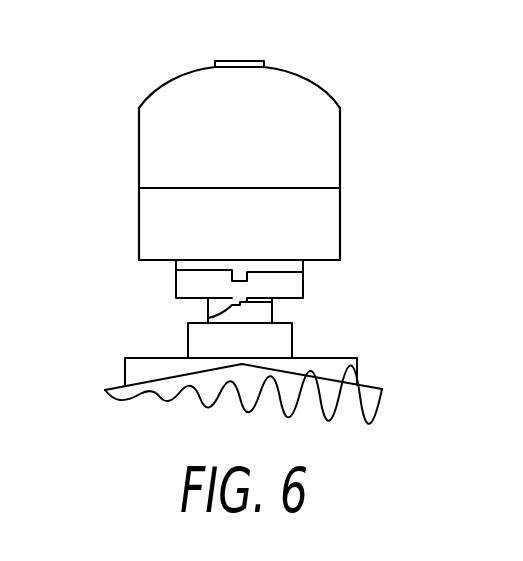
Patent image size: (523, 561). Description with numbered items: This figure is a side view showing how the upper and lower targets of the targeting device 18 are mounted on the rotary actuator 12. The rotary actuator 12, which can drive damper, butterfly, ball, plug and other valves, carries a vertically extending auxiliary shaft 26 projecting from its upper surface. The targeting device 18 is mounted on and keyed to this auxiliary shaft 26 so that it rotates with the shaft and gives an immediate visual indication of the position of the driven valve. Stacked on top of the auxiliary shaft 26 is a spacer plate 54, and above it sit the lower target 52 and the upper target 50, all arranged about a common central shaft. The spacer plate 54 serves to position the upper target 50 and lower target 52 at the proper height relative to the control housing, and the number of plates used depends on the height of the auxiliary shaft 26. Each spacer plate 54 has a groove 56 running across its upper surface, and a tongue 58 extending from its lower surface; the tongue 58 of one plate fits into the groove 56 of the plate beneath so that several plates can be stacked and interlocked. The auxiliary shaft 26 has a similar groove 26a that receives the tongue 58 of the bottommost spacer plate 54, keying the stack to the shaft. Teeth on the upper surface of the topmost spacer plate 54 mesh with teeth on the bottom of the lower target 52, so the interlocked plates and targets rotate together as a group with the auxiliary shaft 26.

The targeting device 18 is at (327, 75).
The upper target 50 is at (322, 143).
The lower target 52 is at (322, 220).
The spacer plate 54 is at (176, 264).
The groove 56 is at (303, 271).
The tongue 58 is at (272, 304).
The auxiliary shaft 26 is at (264, 318).
The groove 26a is at (206, 315).
The rotary actuator 12 is at (135, 364).